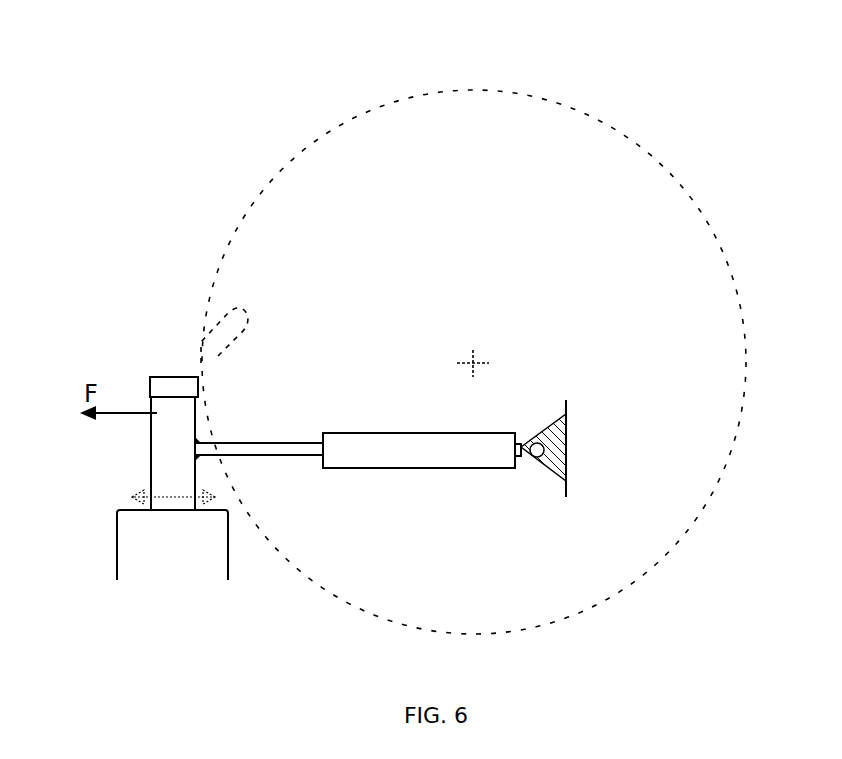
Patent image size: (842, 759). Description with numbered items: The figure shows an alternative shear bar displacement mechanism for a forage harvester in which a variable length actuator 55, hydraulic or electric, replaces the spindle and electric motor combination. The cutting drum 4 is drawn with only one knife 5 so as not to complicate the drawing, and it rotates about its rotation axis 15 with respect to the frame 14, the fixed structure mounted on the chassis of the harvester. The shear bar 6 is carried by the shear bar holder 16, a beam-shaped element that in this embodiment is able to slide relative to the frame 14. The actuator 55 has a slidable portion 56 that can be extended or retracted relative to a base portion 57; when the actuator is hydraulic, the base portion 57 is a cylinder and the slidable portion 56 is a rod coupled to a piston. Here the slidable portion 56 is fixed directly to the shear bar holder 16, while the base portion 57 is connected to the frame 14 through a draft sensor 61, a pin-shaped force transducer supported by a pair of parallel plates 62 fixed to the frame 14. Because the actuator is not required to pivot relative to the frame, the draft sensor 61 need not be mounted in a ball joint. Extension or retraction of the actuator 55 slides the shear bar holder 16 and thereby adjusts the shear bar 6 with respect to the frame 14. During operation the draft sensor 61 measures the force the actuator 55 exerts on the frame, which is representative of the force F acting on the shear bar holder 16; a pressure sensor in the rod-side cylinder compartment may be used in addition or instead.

The cutting drum 4 is at (296, 157).
The knife 5 is at (225, 335).
The shear bar 6 is at (160, 387).
The frame 14 is at (128, 551).
The rotation axis 15 is at (482, 356).
The shear bar holder 16 is at (158, 452).
The variable length actuator 55 is at (366, 433).
The slidable portion 56 is at (248, 452).
The base portion 57 is at (520, 437).
The draft sensor 61 is at (538, 444).
The parallel plates 62 is at (550, 467).